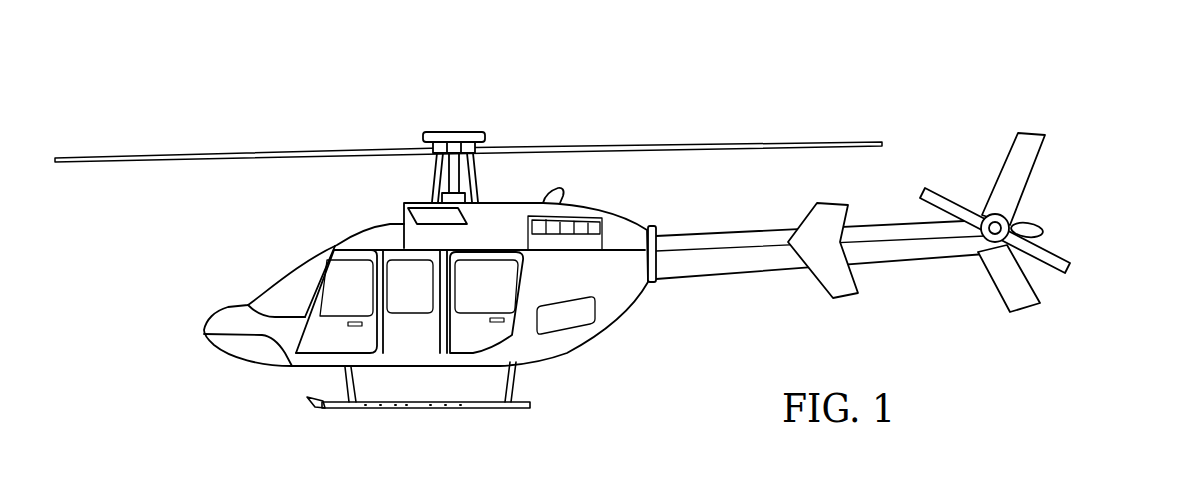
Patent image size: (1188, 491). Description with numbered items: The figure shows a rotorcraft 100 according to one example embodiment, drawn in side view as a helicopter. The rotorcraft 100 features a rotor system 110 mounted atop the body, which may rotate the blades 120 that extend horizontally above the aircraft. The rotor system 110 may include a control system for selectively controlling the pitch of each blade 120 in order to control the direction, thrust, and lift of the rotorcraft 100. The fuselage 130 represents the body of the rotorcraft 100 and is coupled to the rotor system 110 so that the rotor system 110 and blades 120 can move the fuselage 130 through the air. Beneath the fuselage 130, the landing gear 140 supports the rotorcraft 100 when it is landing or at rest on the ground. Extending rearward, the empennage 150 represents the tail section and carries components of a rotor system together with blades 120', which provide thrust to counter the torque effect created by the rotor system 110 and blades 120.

The rotorcraft 100 is at (299, 87).
The rotor system 110 is at (452, 133).
The blades 120 is at (468, 122).
The blades 120' is at (1036, 233).
The fuselage 130 is at (245, 364).
The landing gear 140 is at (397, 408).
The empennage 150 is at (728, 276).